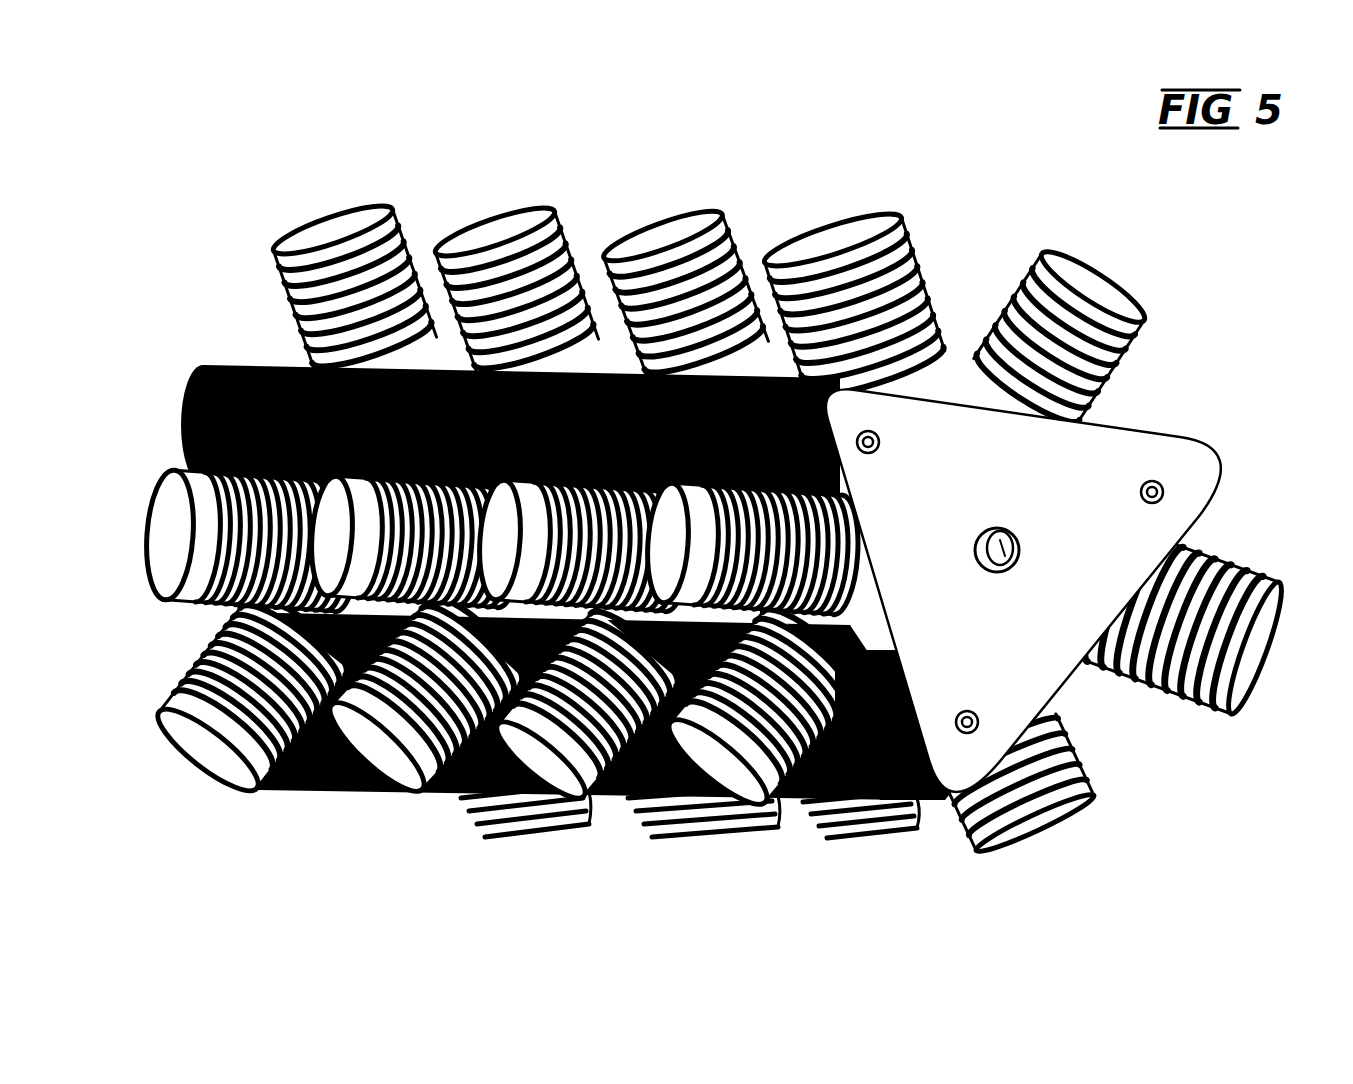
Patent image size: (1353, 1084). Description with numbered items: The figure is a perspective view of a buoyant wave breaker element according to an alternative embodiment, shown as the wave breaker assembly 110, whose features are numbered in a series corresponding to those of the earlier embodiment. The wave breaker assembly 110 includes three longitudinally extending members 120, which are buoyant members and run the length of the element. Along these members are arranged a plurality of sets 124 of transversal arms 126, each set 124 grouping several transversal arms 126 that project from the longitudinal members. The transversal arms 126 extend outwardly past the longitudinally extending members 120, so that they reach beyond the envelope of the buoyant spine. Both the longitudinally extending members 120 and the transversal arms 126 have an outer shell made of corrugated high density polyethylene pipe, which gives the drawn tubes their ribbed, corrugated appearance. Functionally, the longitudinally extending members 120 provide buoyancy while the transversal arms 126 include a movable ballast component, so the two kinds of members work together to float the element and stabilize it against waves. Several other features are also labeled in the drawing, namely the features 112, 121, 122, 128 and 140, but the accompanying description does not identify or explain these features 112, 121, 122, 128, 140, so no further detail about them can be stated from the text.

The wave breaker assembly 110 is at (686, 168).
The tube bundle junction 112 is at (972, 286).
The longitudinally extending member 120 is at (232, 365).
The gap between tubes 121 is at (305, 770).
The triangular mounting plate 122 is at (1052, 594).
The set of transversal arms 124 is at (243, 735).
The transversal arm 126 is at (400, 215).
The hole 128 is at (1022, 524).
The insert in hole 140 is at (1030, 535).